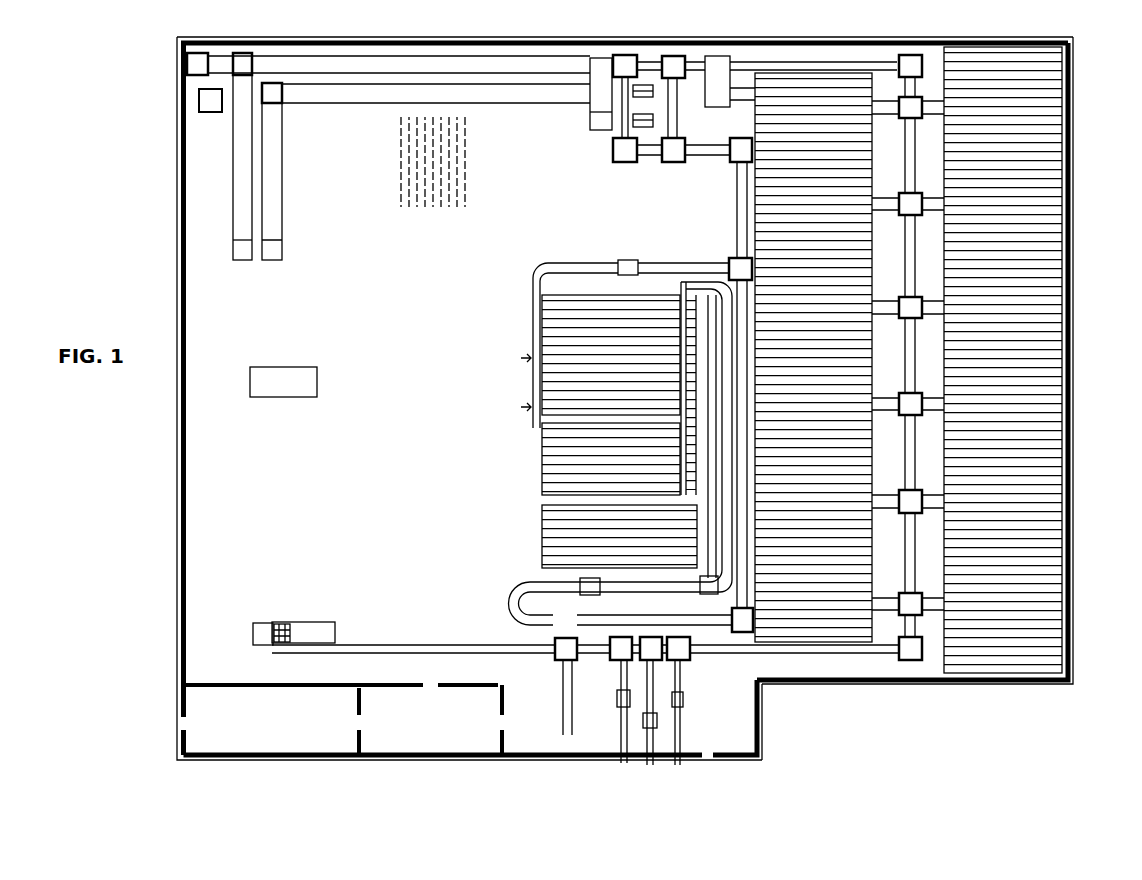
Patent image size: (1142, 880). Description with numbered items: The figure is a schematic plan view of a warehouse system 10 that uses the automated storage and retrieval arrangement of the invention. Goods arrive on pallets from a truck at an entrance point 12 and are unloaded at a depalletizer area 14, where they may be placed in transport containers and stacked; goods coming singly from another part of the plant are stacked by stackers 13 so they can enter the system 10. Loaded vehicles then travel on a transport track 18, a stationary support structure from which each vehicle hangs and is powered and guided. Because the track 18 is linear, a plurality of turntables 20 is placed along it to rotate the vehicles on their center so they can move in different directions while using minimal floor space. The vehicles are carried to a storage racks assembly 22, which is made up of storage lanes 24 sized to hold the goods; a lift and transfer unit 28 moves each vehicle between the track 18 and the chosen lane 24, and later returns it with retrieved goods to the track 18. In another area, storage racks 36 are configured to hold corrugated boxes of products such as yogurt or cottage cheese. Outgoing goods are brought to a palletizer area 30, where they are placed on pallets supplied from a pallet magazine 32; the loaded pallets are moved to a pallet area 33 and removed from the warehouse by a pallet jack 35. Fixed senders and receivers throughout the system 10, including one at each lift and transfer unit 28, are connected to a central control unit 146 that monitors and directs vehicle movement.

The warehouse system 10 is at (137, 448).
The entrance point 12 is at (256, 633).
The stackers 13 is at (618, 698).
The depalletizer area 14 is at (323, 633).
The transport track 18 is at (822, 65).
The turntables 20 is at (626, 150).
The storage racks assembly 22 is at (1080, 548).
The storage lanes 24 is at (1045, 420).
The lift and transfer unit 28 is at (886, 108).
The palletizer area 30 is at (625, 62).
The pallet magazine 32 is at (190, 63).
The pallet area 33 is at (242, 181).
The pallet jack 35 is at (204, 100).
The storage racks 36 is at (548, 380).
The central control unit 146 is at (315, 380).